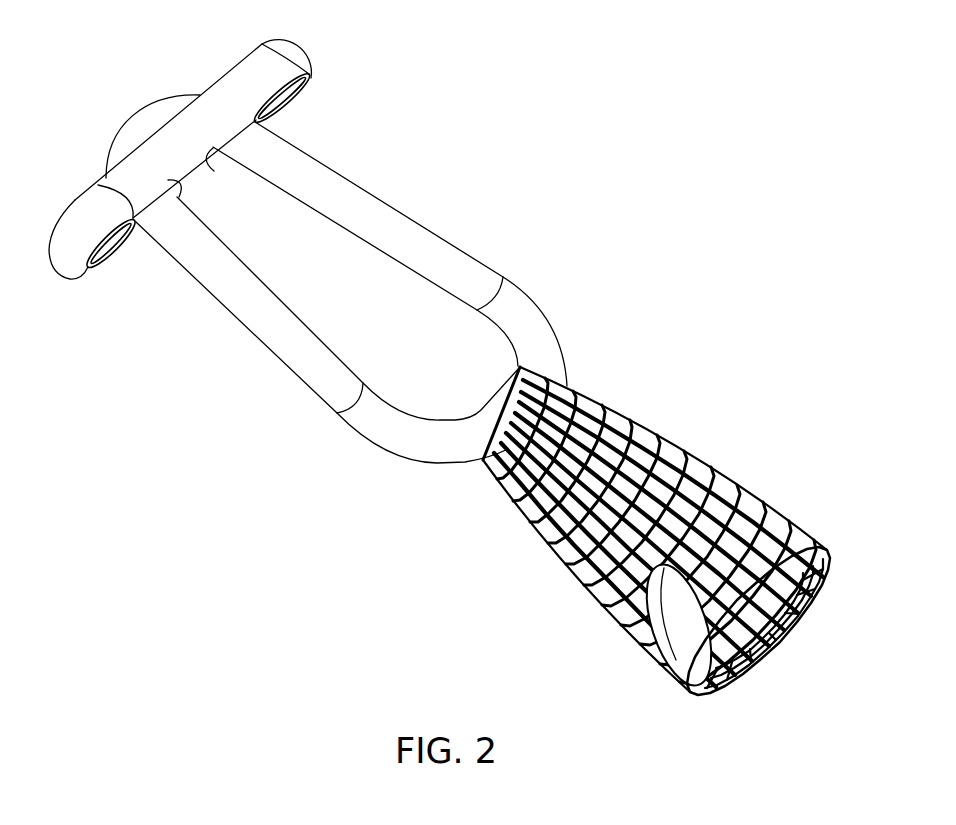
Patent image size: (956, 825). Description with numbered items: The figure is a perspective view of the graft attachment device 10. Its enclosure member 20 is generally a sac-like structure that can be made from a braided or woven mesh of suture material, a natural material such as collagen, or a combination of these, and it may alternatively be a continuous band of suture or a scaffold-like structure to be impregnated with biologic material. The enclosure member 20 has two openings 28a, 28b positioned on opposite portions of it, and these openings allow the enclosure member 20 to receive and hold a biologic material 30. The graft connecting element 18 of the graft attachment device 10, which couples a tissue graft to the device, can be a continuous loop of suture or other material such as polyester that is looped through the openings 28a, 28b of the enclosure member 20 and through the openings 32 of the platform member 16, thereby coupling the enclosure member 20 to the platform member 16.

The graft attachment device 10 is at (238, 401).
The platform member 16 is at (247, 70).
The graft connecting element 18 is at (363, 200).
The enclosure member 20 is at (637, 428).
The opening 28a is at (523, 494).
The opening 28b is at (742, 449).
The biologic material 30 is at (687, 613).
The openings 32 is at (121, 251).